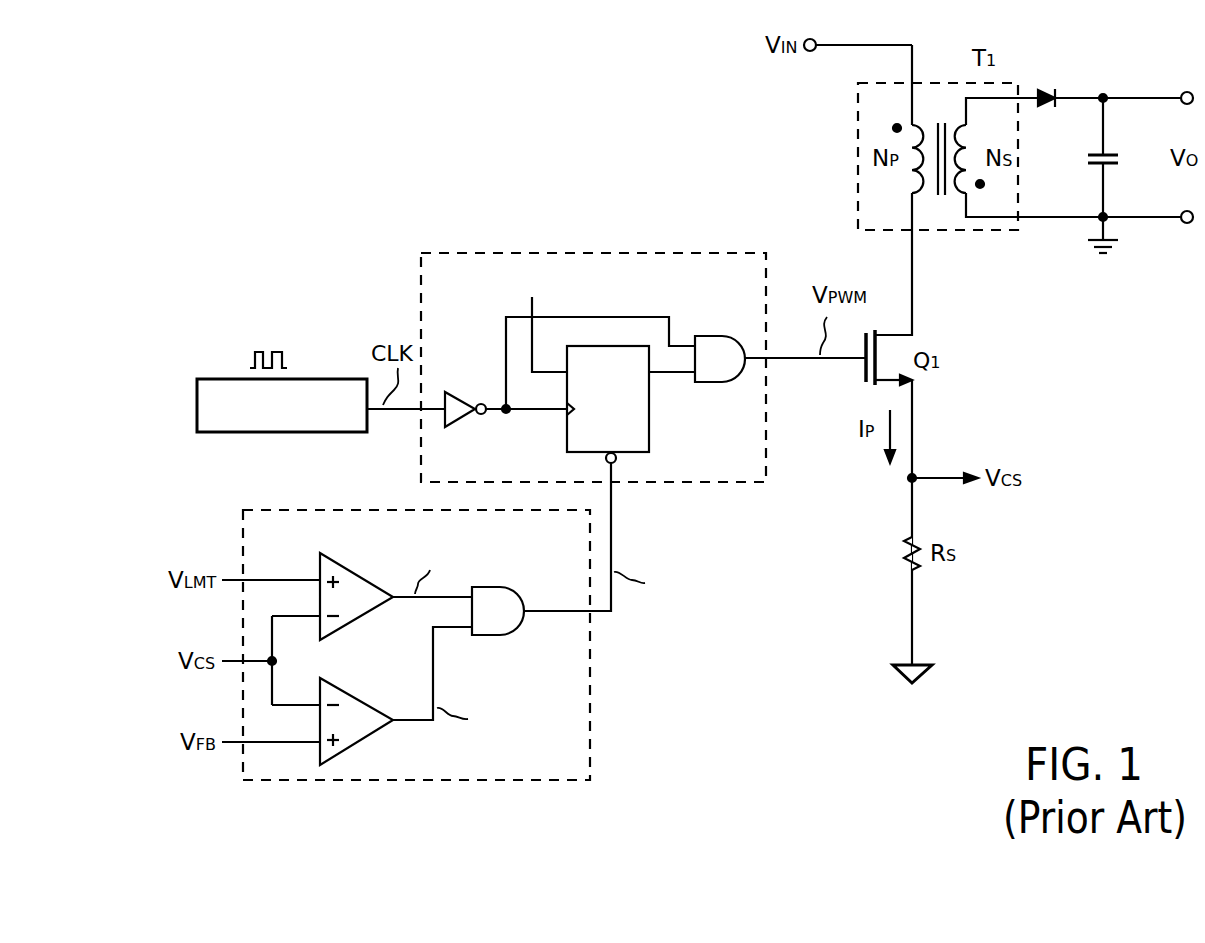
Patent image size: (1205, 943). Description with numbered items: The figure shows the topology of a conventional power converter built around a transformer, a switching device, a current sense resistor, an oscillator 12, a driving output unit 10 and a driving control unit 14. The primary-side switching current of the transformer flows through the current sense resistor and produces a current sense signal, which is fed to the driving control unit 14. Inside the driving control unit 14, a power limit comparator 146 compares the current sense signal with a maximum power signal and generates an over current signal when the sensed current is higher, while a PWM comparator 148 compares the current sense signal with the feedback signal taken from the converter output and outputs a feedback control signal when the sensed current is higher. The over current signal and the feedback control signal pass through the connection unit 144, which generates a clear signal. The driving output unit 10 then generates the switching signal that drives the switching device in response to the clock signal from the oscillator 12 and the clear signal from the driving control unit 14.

The driving output unit 10 is at (717, 253).
The oscillator 12 is at (312, 377).
The driving control unit 14 is at (456, 621).
The connection unit 144 is at (495, 586).
The power limit comparator 146 is at (358, 566).
The PWM comparator 148 is at (358, 689).